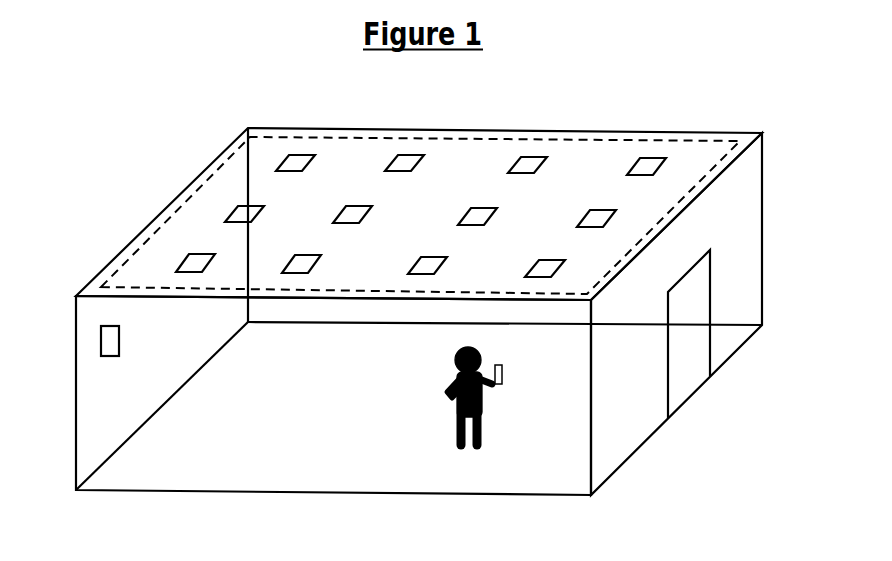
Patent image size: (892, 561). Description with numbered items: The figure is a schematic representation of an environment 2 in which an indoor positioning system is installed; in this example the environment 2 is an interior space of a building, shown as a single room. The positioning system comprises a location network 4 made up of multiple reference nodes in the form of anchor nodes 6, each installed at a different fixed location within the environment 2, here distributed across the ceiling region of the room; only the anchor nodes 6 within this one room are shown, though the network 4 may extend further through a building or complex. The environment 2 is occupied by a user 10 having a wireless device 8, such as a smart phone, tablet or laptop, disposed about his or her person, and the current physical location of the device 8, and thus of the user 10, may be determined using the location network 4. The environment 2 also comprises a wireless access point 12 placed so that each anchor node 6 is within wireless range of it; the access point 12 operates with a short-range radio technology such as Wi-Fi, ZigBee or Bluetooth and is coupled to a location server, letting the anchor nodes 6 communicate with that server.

The environment 2 is at (630, 132).
The location network 4 is at (502, 138).
The anchor nodes 6 is at (540, 163).
The wireless device 8 is at (503, 374).
The user 10 is at (456, 413).
The wireless access point 12 is at (120, 341).